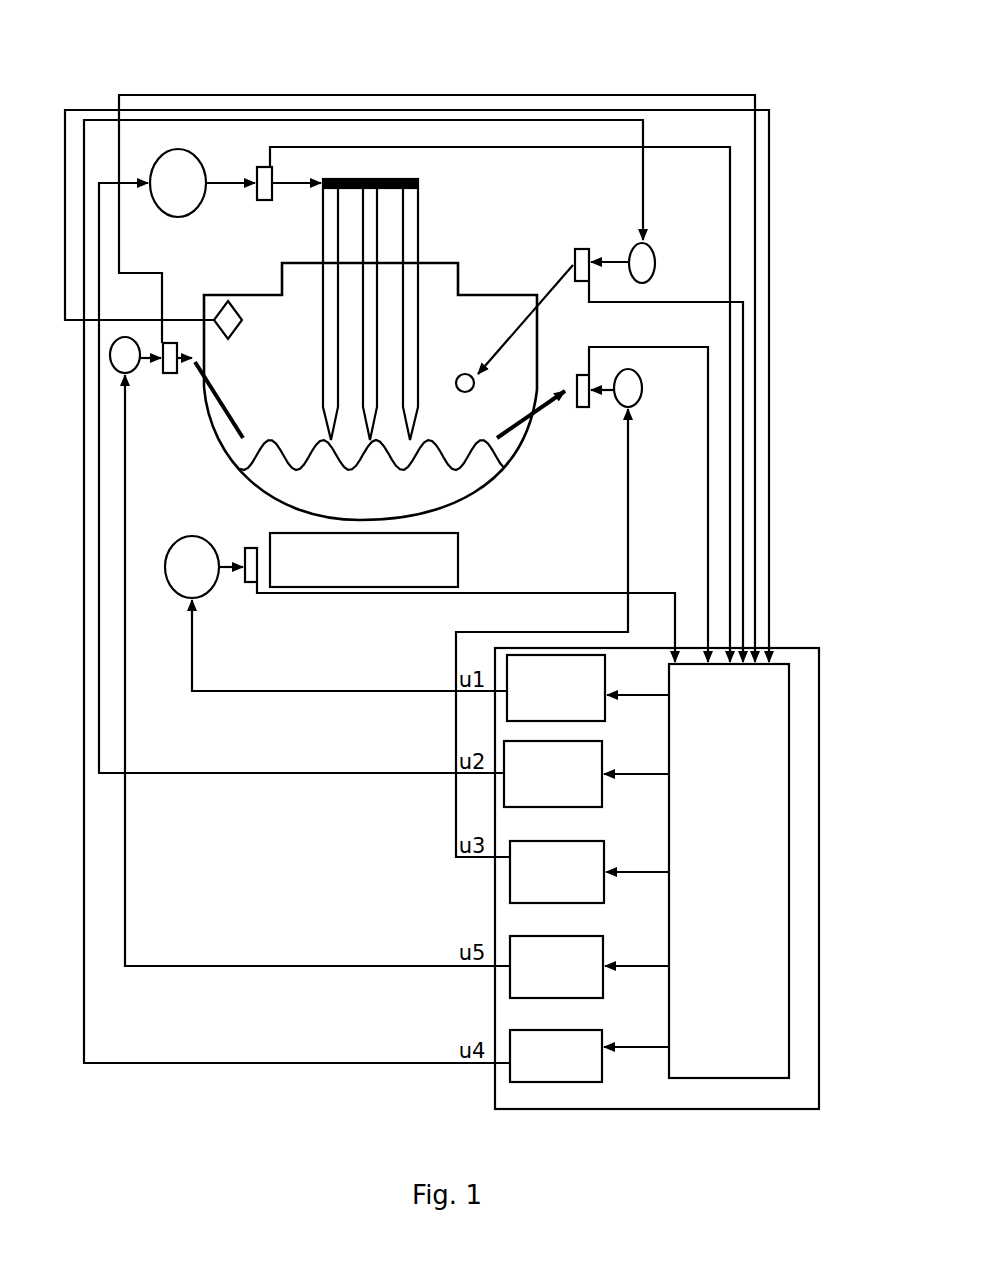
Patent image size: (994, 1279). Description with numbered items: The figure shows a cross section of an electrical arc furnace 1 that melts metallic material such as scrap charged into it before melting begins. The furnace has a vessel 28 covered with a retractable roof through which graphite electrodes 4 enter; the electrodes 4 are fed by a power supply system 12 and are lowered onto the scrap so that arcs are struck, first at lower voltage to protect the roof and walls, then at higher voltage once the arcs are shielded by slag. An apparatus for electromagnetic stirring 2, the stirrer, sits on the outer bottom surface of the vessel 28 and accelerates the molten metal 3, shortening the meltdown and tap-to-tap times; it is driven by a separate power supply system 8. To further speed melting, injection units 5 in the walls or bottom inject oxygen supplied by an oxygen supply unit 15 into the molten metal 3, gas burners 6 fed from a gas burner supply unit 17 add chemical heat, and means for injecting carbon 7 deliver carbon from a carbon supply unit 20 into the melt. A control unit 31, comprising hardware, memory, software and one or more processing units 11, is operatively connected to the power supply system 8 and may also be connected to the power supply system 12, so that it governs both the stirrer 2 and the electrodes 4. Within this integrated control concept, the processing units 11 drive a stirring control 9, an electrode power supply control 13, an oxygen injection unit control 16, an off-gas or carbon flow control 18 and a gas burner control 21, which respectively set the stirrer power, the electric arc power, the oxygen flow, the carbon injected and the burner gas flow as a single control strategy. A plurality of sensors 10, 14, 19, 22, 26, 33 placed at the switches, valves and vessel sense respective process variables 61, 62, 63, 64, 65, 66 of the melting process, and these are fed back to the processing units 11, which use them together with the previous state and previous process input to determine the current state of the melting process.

The electrical arc furnace 1 is at (183, 63).
The apparatus for electromagnetic stirring 2 is at (351, 571).
The molten metal 3 is at (368, 508).
The electrodes 4 is at (418, 340).
The injection units 5 is at (535, 412).
The gas burners 6 is at (458, 390).
The means for injecting carbon 7 is at (230, 410).
The power supply system 8 is at (185, 578).
The stirring control 9 is at (548, 699).
The sensor 10 is at (250, 582).
The processing units 11 is at (716, 874).
The power supply system 12 is at (165, 194).
The electrode power supply control 13 is at (542, 785).
The sensor 14 is at (260, 200).
The oxygen supply unit 15 is at (642, 382).
The oxygen injection unit control 16 is at (542, 883).
The gas burner supply unit 17 is at (630, 248).
The off-gas control 18 is at (542, 977).
The sensor 19 is at (575, 249).
The carbon supply unit 20 is at (135, 372).
The gas burner control 21 is at (542, 1067).
The sensor 22 is at (170, 373).
The sensor 26 is at (583, 407).
The vessel 28 is at (497, 488).
The control unit 31 is at (801, 640).
The sensor 33 is at (232, 301).
The process variable 61 is at (400, 593).
The process variable 62 is at (728, 193).
The process variable 63 is at (645, 347).
The process variable 64 is at (737, 302).
The process variable 65 is at (770, 135).
The process variable 66 is at (583, 95).